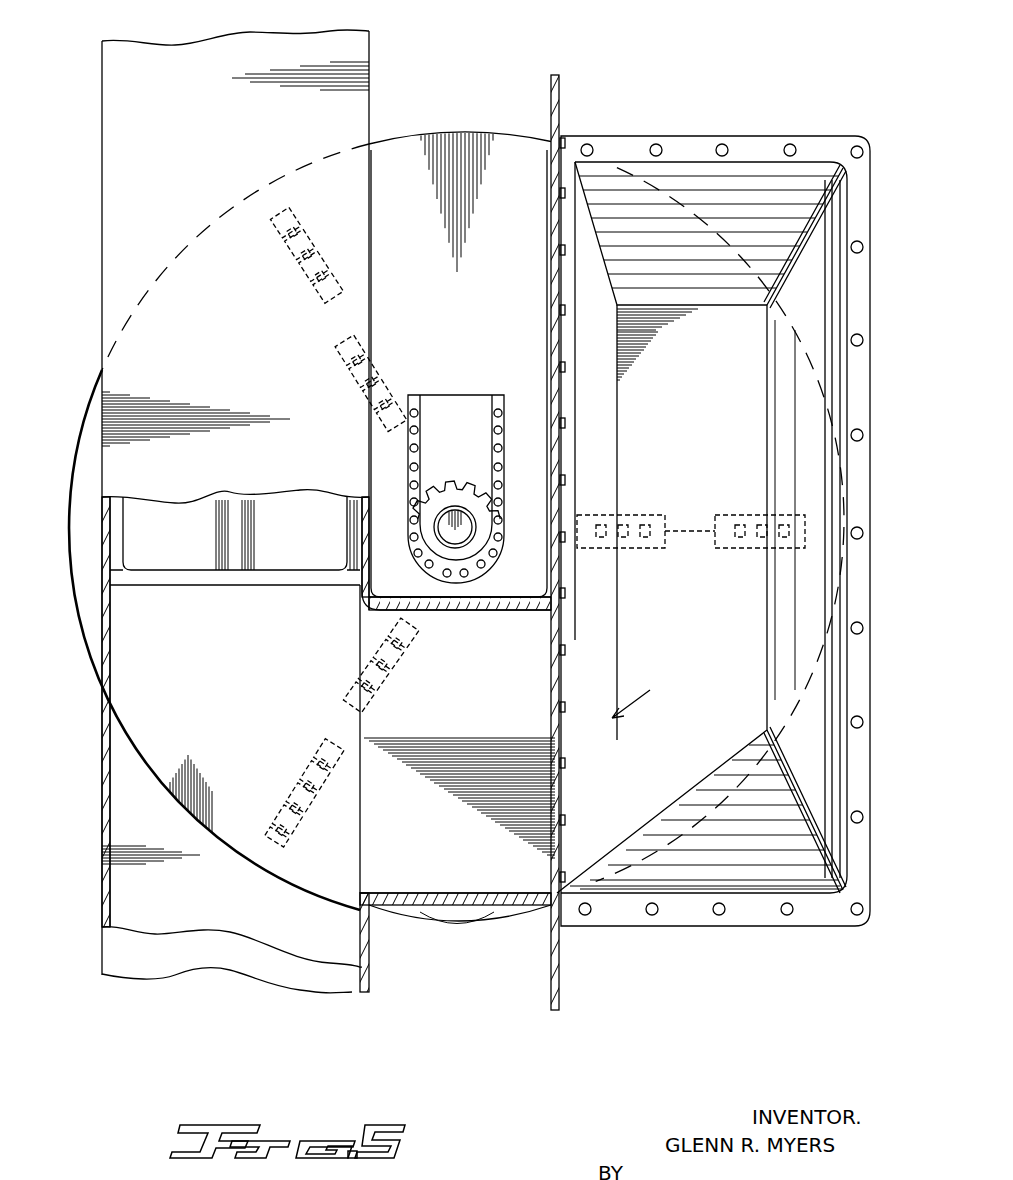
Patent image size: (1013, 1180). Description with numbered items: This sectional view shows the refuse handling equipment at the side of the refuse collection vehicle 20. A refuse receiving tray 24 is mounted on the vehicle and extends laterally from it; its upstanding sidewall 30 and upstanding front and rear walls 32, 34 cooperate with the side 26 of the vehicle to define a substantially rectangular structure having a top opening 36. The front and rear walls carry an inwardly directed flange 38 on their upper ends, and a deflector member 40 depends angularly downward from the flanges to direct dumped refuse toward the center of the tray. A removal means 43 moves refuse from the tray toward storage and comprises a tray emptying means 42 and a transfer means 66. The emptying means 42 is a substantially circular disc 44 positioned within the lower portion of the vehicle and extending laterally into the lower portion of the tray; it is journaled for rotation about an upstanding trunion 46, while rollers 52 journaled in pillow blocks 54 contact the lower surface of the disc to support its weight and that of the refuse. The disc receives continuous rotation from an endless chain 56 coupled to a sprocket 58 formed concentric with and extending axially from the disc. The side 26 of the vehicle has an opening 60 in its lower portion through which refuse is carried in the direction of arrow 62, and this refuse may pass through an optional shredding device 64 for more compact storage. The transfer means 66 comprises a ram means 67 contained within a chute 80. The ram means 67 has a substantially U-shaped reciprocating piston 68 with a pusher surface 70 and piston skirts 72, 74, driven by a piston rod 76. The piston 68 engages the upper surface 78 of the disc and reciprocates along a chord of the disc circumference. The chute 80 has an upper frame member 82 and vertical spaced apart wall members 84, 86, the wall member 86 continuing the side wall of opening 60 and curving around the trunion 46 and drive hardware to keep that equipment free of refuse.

The vehicle 20 is at (568, 89).
The refuse receiving tray 24 is at (882, 174).
The side of the vehicle 26 is at (556, 126).
The upstanding sidewall 30 is at (870, 396).
The front wall 32 is at (742, 138).
The rear wall 34 is at (660, 926).
The top opening 36 is at (830, 326).
The flange 38 is at (682, 138).
The deflector member 40 is at (822, 188).
The tray emptying means 42 is at (460, 132).
The removal means 43 is at (387, 135).
The circular disc 44 is at (522, 140).
The trunion 46 is at (452, 508).
The rollers 52 is at (296, 270).
The pillow blocks 54 is at (347, 343).
The endless chain 56 is at (416, 397).
The sprocket 58 is at (470, 490).
The opening 60 is at (560, 662).
The arrow 62 is at (639, 707).
The shredding device 64 is at (560, 810).
The transfer means 66 is at (94, 301).
The ram means 67 is at (296, 592).
The reciprocating piston 68 is at (215, 585).
The pusher surface 70 is at (255, 585).
The piston skirt 72 is at (128, 534).
The piston skirt 74 is at (347, 543).
The piston rod 76 is at (216, 545).
The upper surface of the disc 78 is at (118, 682).
The chute 80 is at (214, 975).
The upper frame member 82 is at (94, 434).
The vertical wall member 84 is at (112, 658).
The vertical wall member 86 is at (360, 900).